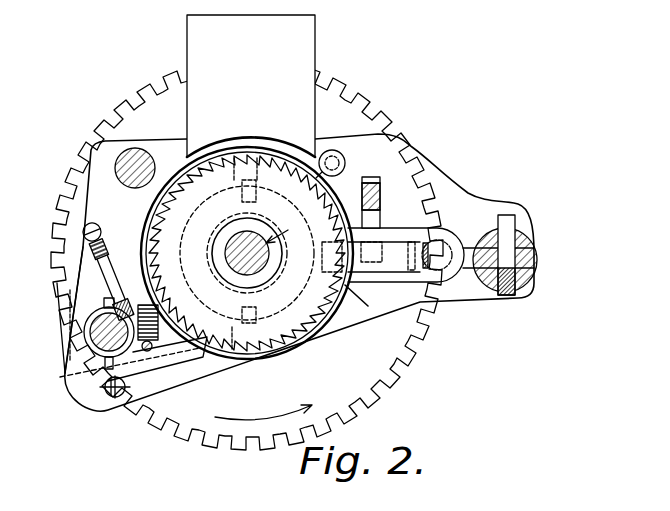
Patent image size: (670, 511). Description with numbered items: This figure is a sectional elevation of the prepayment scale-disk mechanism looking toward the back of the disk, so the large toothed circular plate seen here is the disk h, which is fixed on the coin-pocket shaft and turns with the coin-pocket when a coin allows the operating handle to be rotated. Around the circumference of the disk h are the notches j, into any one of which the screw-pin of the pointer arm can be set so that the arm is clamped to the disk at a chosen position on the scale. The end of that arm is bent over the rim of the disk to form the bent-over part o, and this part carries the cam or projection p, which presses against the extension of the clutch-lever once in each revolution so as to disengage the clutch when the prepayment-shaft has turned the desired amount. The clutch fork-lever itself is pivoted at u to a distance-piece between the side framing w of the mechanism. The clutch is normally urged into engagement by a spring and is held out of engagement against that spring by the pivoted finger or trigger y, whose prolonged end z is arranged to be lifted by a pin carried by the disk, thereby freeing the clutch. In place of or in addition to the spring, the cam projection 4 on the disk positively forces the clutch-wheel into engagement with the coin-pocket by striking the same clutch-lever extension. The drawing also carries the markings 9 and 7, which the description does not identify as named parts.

The notches j is at (126, 104).
The disk h is at (247, 233).
The block 9 is at (251, 86).
The side framing w is at (272, 272).
The bent-over part of the arm o is at (67, 300).
The cam or projection p is at (68, 307).
The end of the trigger z is at (356, 194).
The pivoted finger or trigger y is at (382, 186).
The cam projection 4 is at (416, 250).
The pivot u is at (511, 222).
The hub 7 is at (281, 227).